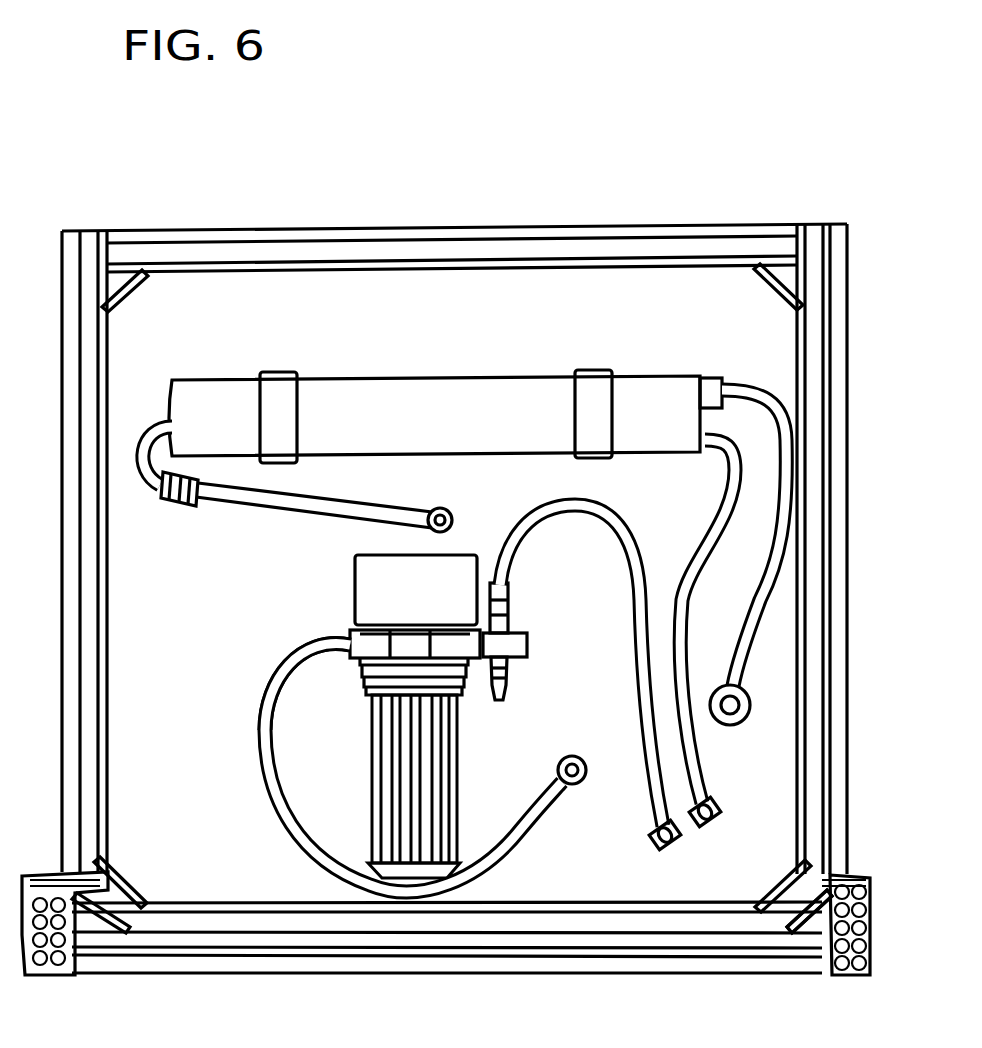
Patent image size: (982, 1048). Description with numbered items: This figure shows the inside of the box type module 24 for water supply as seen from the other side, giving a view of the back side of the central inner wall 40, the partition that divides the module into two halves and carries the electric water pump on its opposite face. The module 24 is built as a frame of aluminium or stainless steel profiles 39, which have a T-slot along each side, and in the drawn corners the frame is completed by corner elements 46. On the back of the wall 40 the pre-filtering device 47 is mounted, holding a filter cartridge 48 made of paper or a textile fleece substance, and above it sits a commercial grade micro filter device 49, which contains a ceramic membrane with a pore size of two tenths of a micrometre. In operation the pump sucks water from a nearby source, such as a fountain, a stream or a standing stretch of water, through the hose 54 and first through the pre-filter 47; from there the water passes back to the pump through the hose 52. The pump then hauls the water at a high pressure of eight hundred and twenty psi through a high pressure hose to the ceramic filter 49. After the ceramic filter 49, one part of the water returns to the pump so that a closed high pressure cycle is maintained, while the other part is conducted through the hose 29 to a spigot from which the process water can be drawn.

The box type module 24 is at (432, 307).
The hose 29 is at (690, 772).
The aluminium or stainless steel profile 39 is at (840, 805).
The central inner wall 40 is at (590, 582).
The corner bracket 46 is at (813, 920).
The pre-filtering device 47 is at (265, 648).
The filter cartridge 48 is at (400, 775).
The micro filter device 49 is at (406, 400).
The hose 52 is at (624, 527).
The hose 54 is at (300, 822).